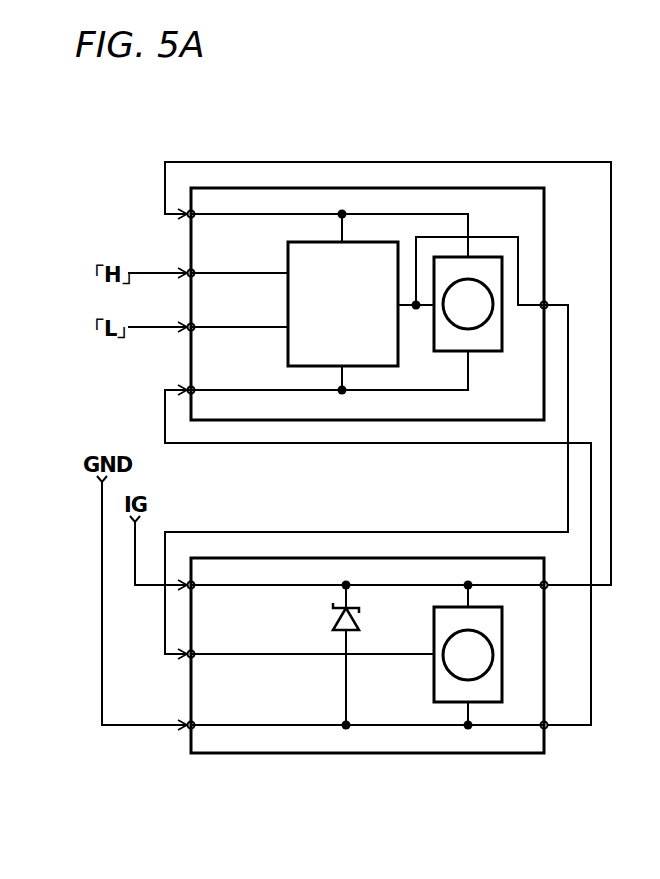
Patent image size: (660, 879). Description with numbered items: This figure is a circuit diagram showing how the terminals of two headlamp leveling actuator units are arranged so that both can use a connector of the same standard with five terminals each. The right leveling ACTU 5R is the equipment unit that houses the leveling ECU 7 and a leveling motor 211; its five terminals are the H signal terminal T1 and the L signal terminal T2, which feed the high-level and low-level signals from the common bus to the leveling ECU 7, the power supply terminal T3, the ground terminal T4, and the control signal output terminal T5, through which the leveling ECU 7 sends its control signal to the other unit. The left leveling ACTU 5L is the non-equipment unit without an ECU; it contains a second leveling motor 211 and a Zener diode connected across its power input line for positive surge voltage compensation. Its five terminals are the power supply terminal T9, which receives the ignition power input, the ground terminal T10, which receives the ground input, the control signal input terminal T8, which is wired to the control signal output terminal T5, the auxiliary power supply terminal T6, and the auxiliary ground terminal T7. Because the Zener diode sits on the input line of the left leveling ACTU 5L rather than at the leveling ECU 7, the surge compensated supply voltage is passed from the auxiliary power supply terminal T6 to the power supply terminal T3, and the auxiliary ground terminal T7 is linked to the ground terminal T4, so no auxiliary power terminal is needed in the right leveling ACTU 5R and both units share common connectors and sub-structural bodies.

The right leveling ACTU 5R is at (484, 188).
The left leveling ACTU 5L is at (338, 754).
The leveling ECU 7 is at (288, 256).
The leveling motor 211 is at (480, 323).
The H signal terminal T1 is at (188, 277).
The L signal terminal T2 is at (188, 331).
The power supply terminal T3 is at (188, 218).
The GND terminal T4 is at (188, 394).
The control signal output terminal T5 is at (547, 302).
The auxiliary power supply terminal T6 is at (548, 588).
The auxiliary GND terminal T7 is at (548, 723).
The control signal input terminal T8 is at (188, 658).
The power supply terminal T9 is at (188, 589).
The GND terminal T10 is at (188, 729).